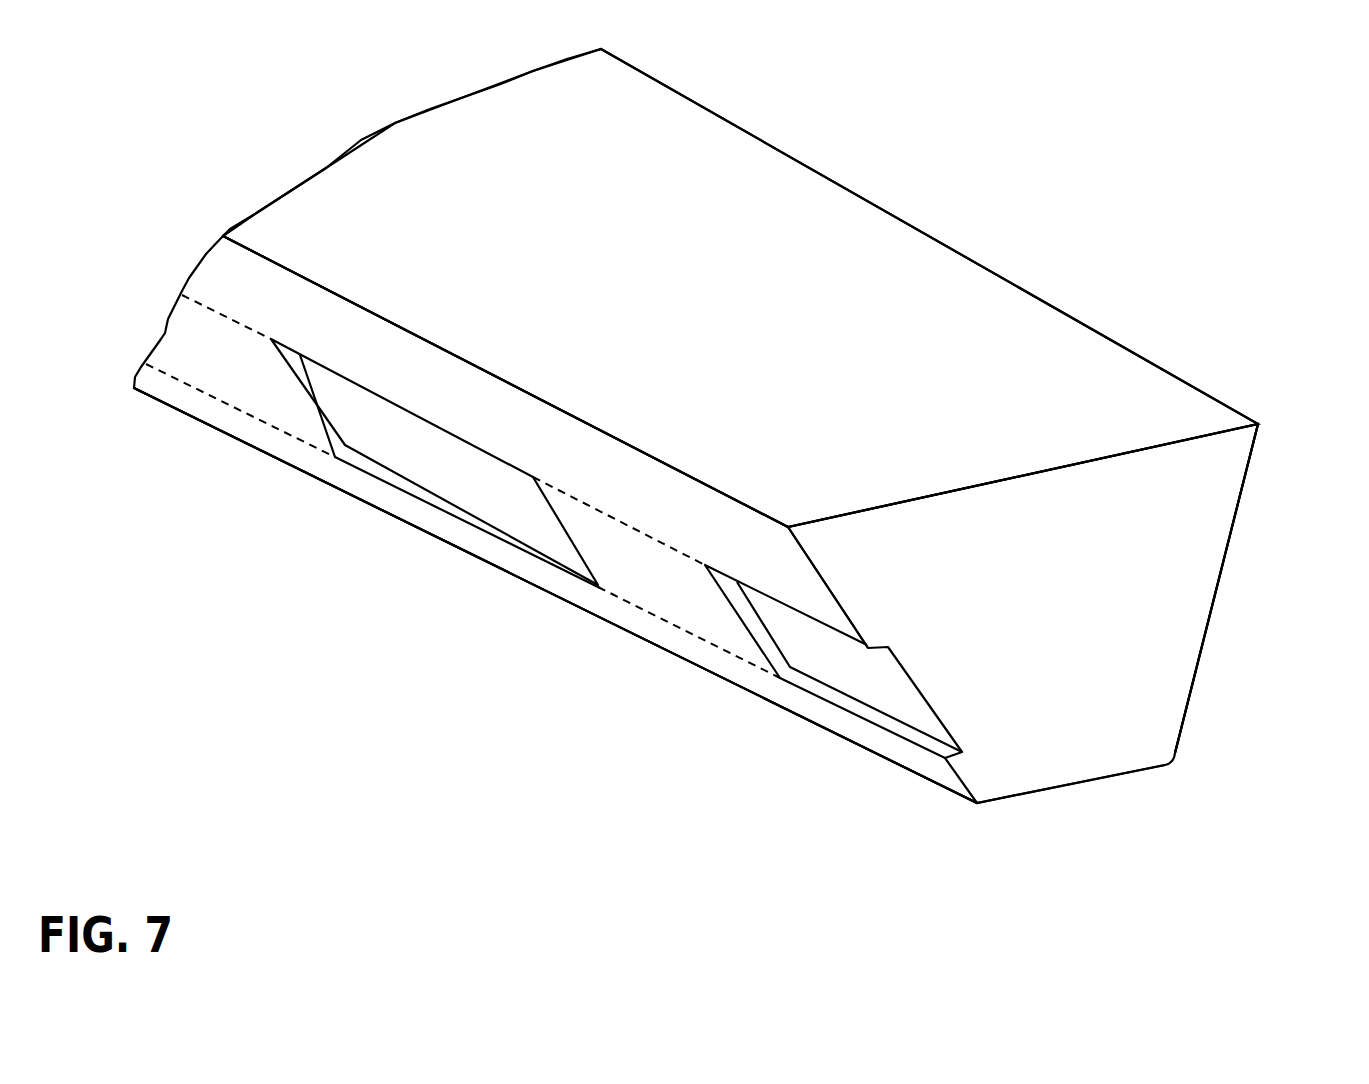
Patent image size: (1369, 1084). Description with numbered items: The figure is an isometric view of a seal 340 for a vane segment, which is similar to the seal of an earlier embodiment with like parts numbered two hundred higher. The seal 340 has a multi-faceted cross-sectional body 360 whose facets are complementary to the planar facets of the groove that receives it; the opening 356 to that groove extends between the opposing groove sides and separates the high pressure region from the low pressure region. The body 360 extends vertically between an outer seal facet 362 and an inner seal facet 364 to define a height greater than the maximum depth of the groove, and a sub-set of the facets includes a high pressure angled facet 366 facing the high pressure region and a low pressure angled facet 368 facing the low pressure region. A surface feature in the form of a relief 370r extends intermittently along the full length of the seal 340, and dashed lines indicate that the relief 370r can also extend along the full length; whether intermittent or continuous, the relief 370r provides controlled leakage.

The seal 340 is at (952, 375).
The opening 356 is at (1163, 538).
The body 360 is at (1100, 624).
The outer seal facet 362 is at (735, 326).
The inner seal facet 364 is at (1078, 783).
The high pressure angled facet 366 is at (672, 502).
The low pressure angled facet 368 is at (1221, 582).
The relief 370r is at (466, 470).